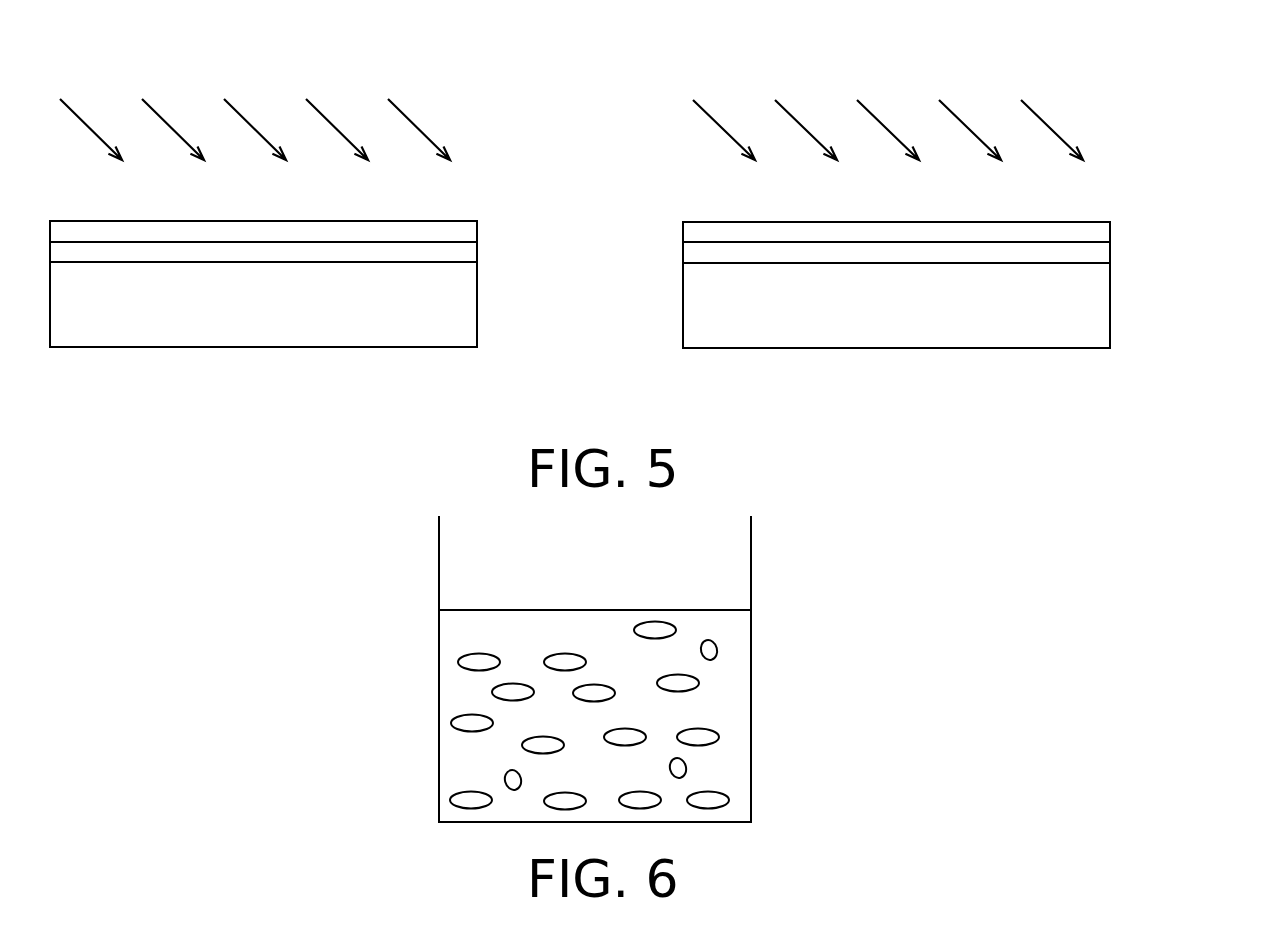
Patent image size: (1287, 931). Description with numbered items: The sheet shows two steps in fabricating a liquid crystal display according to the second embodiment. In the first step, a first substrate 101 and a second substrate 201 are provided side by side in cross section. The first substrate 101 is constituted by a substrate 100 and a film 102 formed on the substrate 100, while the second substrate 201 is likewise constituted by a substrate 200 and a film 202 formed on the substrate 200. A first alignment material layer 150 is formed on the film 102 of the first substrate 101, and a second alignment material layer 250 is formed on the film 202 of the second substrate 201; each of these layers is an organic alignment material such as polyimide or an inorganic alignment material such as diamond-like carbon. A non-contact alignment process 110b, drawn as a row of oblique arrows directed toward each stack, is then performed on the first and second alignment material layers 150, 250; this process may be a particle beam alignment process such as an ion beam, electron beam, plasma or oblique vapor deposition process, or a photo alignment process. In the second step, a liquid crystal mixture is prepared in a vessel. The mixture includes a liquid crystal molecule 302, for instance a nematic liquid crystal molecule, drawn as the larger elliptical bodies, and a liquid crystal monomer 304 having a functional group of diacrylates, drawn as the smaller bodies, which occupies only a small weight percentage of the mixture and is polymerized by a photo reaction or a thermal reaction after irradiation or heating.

In FIG. 5, the non-contact alignment process 110b is at (83, 120).
In FIG. 5, the substrate 100 is at (468, 326).
In FIG. 5, the first substrate 101 is at (341, 288).
In FIG. 5, the film 102 is at (468, 254).
In FIG. 5, the first alignment material layer 150 is at (468, 229).
In FIG. 5, the substrate 200 is at (1102, 327).
In FIG. 5, the second substrate 201 is at (970, 289).
In FIG. 5, the film 202 is at (1102, 255).
In FIG. 5, the second alignment material layer 250 is at (1102, 229).
In FIG. 6, the liquid crystal molecule 302 is at (690, 685).
In FIG. 6, the liquid crystal monomer 304 is at (712, 650).